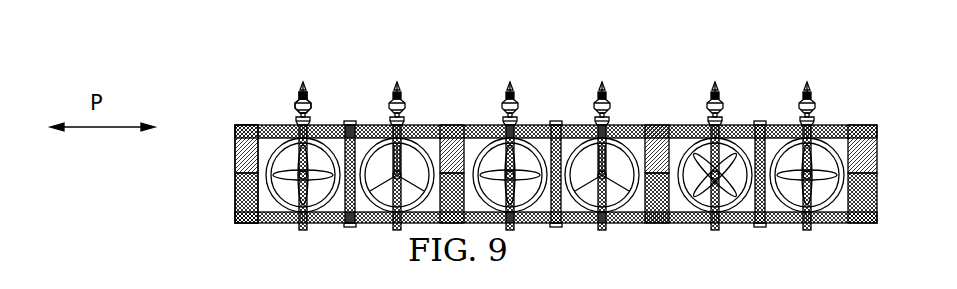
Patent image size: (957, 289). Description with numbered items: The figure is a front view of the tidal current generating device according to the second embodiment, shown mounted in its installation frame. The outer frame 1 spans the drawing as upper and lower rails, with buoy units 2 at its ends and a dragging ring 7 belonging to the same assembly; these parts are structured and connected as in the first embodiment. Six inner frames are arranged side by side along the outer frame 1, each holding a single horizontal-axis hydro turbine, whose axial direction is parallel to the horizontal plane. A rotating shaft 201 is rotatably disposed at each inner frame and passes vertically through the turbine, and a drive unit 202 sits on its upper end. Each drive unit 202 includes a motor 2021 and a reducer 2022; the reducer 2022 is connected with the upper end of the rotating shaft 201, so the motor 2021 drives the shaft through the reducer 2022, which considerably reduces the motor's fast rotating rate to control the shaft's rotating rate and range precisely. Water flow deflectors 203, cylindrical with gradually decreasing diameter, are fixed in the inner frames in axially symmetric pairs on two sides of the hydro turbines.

The outer frame 1 is at (262, 125).
The buoy unit 2 is at (217, 170).
The dragging ring 7 is at (235, 219).
The rotating shaft 201 is at (258, 195).
The water flow deflector 203 is at (235, 167).
The drive unit 202 is at (295, 65).
The motor 2021 is at (363, 89).
The reducer 2022 is at (297, 100).